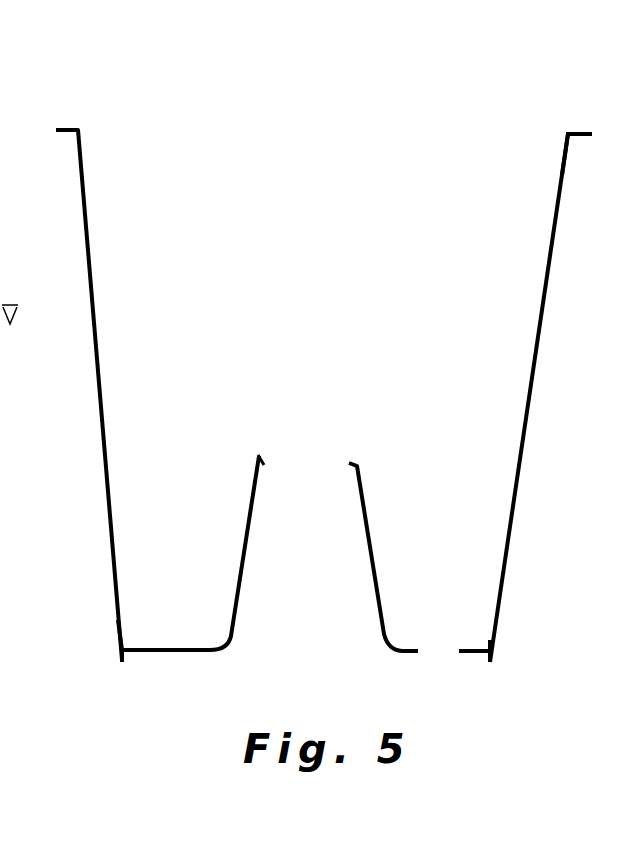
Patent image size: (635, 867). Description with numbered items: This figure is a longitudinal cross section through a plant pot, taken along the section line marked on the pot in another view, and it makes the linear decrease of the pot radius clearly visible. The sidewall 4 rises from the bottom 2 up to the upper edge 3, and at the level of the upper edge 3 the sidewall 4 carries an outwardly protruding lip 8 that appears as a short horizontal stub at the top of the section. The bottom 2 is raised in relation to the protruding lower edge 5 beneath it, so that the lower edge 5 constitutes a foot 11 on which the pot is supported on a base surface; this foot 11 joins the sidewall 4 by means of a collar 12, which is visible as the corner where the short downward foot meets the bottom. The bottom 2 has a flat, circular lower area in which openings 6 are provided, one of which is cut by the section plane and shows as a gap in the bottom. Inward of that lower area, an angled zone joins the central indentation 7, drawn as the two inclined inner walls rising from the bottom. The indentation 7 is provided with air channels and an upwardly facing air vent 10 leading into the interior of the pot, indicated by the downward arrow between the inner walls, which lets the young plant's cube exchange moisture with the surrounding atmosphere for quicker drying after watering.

The bottom 2 is at (168, 653).
The upper edge 3 is at (570, 140).
The sidewall 4 is at (529, 403).
The lower edge 5 is at (492, 662).
The openings 6 is at (438, 650).
The central indentation 7 is at (373, 540).
The lip 8 is at (578, 130).
The air vent 10 is at (302, 462).
The foot 11 is at (119, 657).
The collar 12 is at (121, 628).